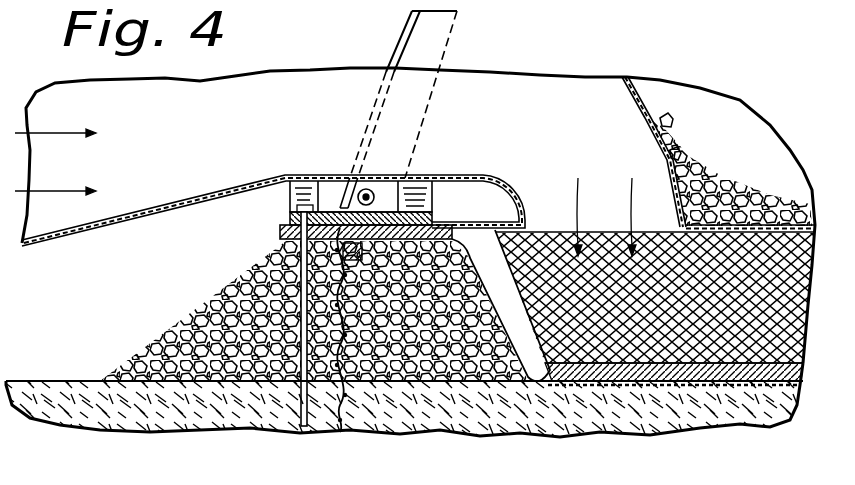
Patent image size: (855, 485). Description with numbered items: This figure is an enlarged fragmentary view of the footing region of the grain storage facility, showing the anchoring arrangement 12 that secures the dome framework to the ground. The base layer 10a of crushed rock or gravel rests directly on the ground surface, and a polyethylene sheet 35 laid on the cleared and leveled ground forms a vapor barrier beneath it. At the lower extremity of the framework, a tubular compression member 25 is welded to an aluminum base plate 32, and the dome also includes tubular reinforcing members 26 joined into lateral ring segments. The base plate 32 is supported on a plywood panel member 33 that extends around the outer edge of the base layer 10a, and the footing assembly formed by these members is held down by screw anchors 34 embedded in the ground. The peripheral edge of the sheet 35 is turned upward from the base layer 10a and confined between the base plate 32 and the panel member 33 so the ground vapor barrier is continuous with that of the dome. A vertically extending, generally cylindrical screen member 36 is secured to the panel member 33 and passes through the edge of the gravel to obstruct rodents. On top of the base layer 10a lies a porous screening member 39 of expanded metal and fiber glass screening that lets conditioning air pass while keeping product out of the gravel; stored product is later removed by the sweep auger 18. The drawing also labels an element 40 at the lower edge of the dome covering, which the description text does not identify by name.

The base layer 10a is at (486, 350).
The anchoring arrangement 12 is at (228, 257).
The sweep auger 18 is at (193, 472).
The compression members 25 is at (440, 29).
The tubular reinforcing members 26 is at (376, 190).
The base plates 32 is at (338, 182).
The panel members 33 is at (396, 239).
The screw anchors 34 is at (308, 428).
The polyethylene sheet 35 is at (510, 348).
The screen member 36 is at (352, 412).
The screening member 39 is at (745, 213).
The cover / hood 40 is at (103, 235).